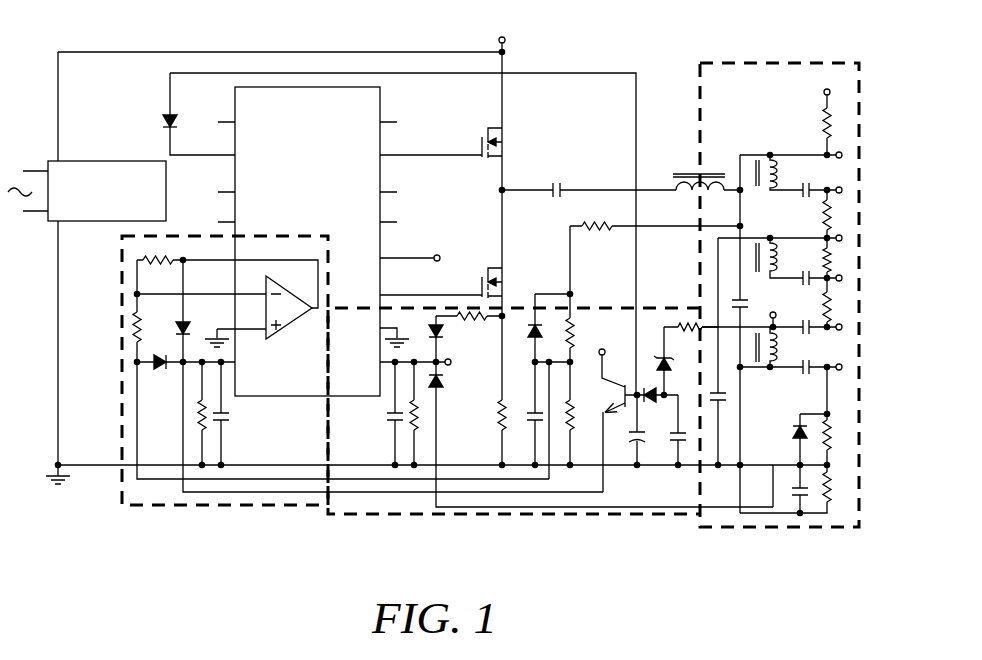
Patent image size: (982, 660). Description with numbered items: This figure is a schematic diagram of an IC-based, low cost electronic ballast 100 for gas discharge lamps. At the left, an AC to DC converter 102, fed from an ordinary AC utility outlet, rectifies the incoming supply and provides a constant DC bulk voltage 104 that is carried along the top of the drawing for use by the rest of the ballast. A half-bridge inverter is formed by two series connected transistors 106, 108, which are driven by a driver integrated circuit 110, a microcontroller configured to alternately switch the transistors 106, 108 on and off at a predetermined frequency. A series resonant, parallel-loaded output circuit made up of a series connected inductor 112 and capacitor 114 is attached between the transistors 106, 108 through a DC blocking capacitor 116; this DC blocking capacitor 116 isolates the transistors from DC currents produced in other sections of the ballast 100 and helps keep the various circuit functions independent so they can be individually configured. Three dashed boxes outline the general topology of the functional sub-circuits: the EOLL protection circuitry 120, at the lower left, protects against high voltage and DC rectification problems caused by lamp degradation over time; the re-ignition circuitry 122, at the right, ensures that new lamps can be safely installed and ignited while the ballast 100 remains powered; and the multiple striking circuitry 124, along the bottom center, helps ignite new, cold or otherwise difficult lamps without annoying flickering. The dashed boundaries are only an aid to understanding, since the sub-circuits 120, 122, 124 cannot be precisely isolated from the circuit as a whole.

The electronic ballast 100 is at (135, 541).
The AC to DC converter 102 is at (70, 161).
The DC bulk voltage 104 is at (133, 52).
The transistor 106 is at (509, 136).
The transistor 108 is at (506, 279).
The driver integrated circuit 110 is at (383, 103).
The inductor 112 is at (680, 174).
The capacitor 114 is at (738, 298).
The DC blocking capacitor 116 is at (563, 187).
The EOLL protection circuitry 120 is at (118, 362).
The re-ignition circuitry 122 is at (737, 63).
The multiple striking circuitry 124 is at (452, 516).